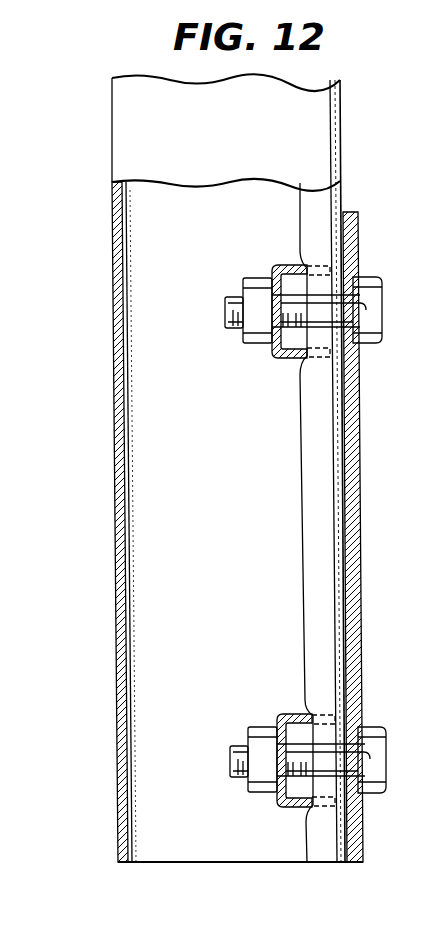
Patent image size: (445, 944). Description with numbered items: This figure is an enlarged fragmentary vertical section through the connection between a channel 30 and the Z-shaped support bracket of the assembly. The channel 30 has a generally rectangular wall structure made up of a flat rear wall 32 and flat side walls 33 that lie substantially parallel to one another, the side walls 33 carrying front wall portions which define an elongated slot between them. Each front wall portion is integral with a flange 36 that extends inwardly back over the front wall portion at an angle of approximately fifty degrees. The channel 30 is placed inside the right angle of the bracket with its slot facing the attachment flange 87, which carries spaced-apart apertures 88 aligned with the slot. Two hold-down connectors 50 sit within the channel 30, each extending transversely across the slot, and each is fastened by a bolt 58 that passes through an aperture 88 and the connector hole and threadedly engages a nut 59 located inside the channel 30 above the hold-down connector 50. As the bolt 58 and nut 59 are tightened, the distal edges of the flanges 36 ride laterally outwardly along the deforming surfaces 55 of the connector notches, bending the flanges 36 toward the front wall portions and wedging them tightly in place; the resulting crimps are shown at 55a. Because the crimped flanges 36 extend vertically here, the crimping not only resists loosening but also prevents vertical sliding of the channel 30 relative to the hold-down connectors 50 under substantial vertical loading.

The channel 30 is at (98, 250).
The rear wall 32 is at (113, 508).
The side wall 33 is at (179, 103).
The flange 36 is at (315, 530).
The hold-down connector 50 is at (278, 262).
The deforming surface 55 is at (313, 357).
The crimp 55a is at (306, 808).
The bolt 58 is at (376, 315).
The nut 59 is at (258, 345).
The attachment flange 87 is at (352, 512).
The aperture 88 is at (353, 297).